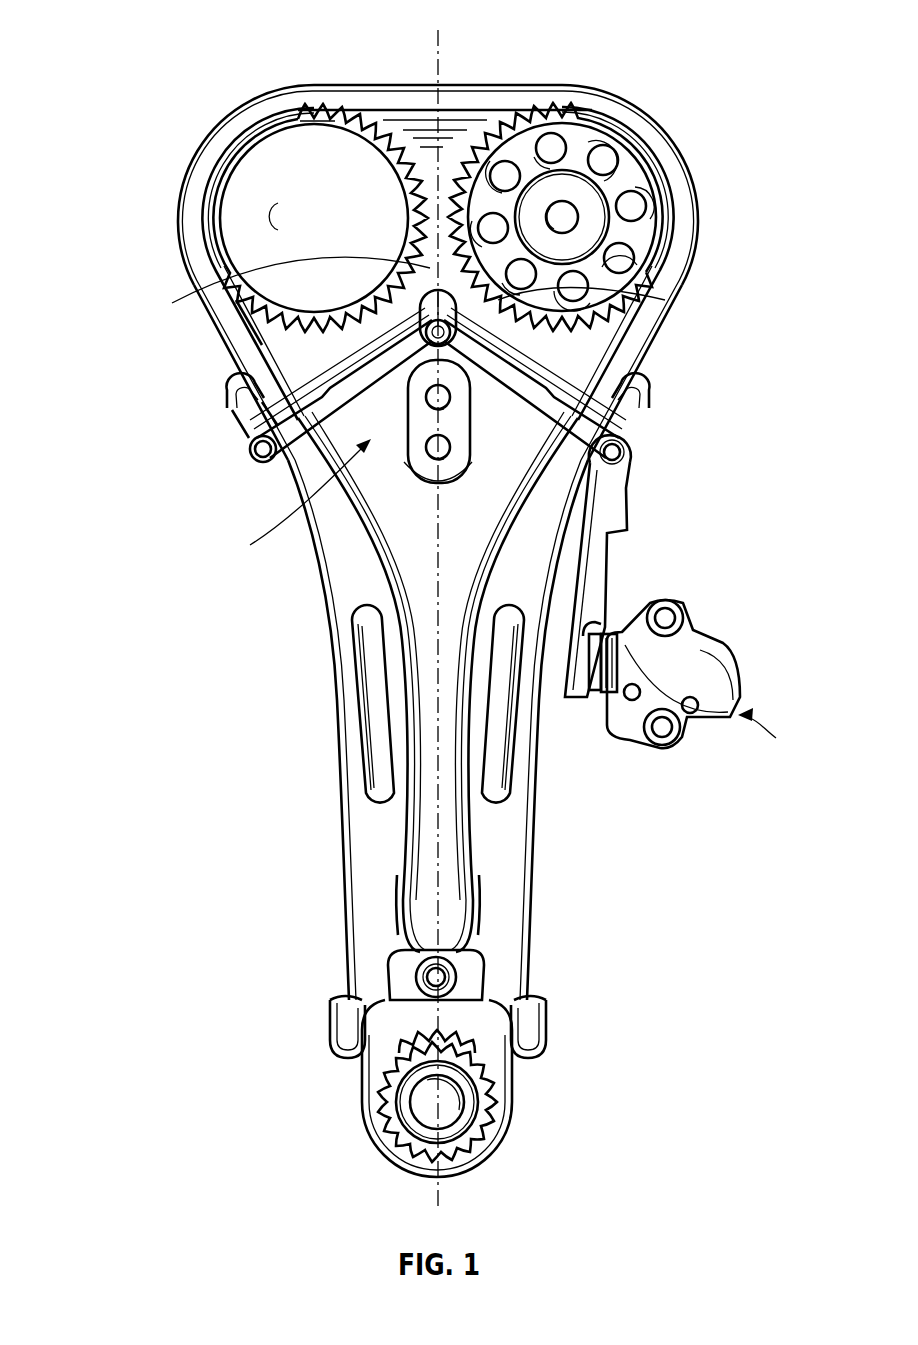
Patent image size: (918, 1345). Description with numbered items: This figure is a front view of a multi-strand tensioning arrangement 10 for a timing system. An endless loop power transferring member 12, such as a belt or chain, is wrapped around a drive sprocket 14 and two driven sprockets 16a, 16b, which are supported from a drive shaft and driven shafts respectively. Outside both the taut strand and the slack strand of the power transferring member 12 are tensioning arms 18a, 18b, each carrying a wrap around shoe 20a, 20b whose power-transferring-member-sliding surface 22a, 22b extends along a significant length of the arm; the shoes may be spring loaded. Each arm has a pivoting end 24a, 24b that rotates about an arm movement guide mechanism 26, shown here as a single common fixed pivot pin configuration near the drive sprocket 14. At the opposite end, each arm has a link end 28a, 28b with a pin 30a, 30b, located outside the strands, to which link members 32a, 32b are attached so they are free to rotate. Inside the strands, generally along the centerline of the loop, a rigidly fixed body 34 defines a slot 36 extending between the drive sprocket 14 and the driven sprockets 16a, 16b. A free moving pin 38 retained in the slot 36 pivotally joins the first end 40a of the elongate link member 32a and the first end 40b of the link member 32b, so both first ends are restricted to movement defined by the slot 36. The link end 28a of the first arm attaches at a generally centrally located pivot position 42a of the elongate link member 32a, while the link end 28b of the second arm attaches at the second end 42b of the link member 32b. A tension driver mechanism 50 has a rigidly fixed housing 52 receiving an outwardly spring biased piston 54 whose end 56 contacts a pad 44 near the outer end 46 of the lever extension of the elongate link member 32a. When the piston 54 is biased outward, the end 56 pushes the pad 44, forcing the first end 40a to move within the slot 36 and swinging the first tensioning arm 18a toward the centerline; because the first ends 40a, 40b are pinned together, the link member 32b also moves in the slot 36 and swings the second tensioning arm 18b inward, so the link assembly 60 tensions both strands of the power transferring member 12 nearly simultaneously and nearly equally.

The multi-strand tensioning arrangement 10 is at (178, 95).
The endless loop power transferring member 12 is at (186, 174).
The drive sprocket 14 is at (405, 1105).
The driven sprocket 16a is at (232, 225).
The driven sprocket 16b is at (632, 170).
The first tensioning arm 18a is at (533, 818).
The second tensioning arm 18b is at (340, 750).
The wrap around shoe 20a is at (525, 860).
The wrap around shoe 20b is at (378, 760).
The power-transferring-member-sliding surface 22a is at (495, 735).
The power-transferring-member-sliding surface 22b is at (382, 722).
The pivoting end 24a is at (458, 945).
The pivoting end 24b is at (410, 910).
The arm movement guide mechanism 26 is at (425, 968).
The link end 28a is at (632, 427).
The link end 28b is at (252, 416).
The pin 30a is at (626, 463).
The pin 30b is at (255, 465).
The elongate link member 32a is at (602, 372).
The link member 32b is at (292, 358).
The fixed body 34 is at (404, 482).
The slot 36 is at (250, 298).
The free moving pin 38 is at (452, 326).
The first end 40a is at (478, 338).
The first end 40b is at (404, 340).
The centrally located pivot position 42a is at (626, 478).
The second end 42b is at (258, 470).
The pad 44 is at (611, 658).
The outer end 46 is at (690, 612).
The tension driver mechanism 50 is at (768, 730).
The fixed housing 52 is at (738, 700).
The piston 54 is at (600, 688).
The end 56 is at (603, 596).
The link assembly 60 is at (250, 545).